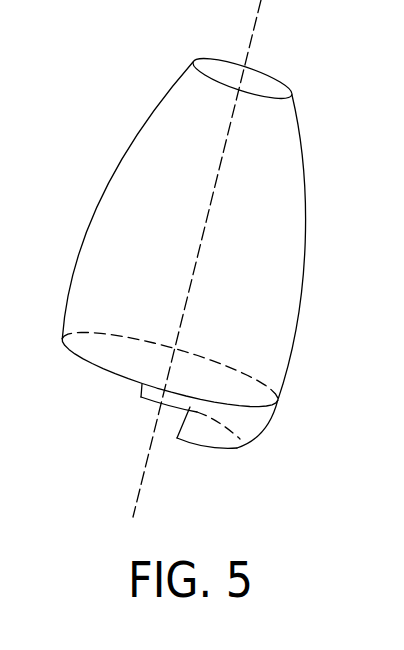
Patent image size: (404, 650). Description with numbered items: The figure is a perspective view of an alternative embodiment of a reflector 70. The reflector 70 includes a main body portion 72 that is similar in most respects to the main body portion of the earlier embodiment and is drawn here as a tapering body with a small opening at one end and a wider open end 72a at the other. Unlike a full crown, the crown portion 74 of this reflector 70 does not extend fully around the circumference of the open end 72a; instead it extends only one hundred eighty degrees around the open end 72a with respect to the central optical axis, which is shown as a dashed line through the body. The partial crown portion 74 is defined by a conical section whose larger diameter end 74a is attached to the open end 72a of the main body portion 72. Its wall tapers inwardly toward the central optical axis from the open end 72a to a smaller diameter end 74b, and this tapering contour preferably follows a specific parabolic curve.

The reflector 70 is at (196, 284).
The main body portion 72 is at (273, 210).
The open end of the main body portion 72a is at (65, 342).
The crown portion 74 is at (255, 451).
The larger diameter end 74a is at (277, 403).
The smaller diameter end 74b is at (235, 450).